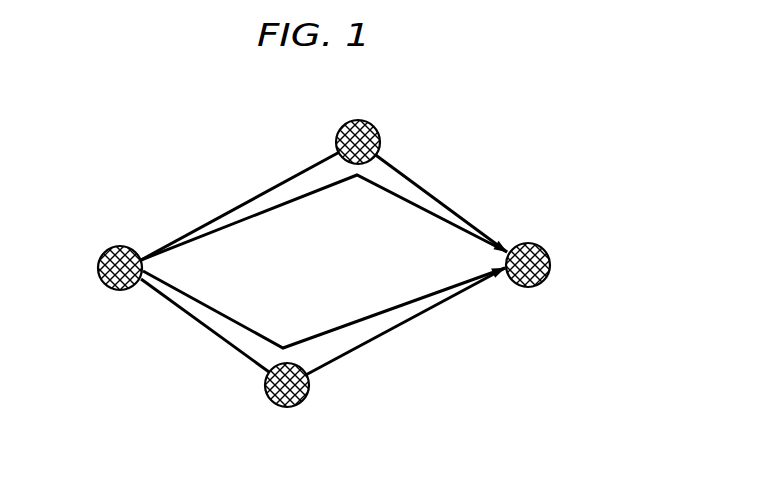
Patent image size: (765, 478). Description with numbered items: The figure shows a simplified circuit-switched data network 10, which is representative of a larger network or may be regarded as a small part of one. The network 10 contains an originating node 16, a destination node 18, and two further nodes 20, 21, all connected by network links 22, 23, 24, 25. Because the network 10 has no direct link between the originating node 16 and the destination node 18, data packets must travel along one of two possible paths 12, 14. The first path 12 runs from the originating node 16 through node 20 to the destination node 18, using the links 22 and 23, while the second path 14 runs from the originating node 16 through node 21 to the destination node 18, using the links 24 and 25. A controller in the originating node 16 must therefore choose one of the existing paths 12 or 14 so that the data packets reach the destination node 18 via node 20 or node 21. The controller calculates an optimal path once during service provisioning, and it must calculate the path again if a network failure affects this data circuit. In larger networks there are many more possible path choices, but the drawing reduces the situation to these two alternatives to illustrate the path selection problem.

The data network 10 is at (512, 97).
The path 12 is at (300, 198).
The path 14 is at (347, 325).
The originating node 16 is at (98, 268).
The destination node 18 is at (550, 265).
The node 20 is at (381, 141).
The node 21 is at (265, 386).
The network link 22 is at (289, 180).
The network link 23 is at (483, 231).
The network link 24 is at (163, 295).
The network link 25 is at (353, 350).